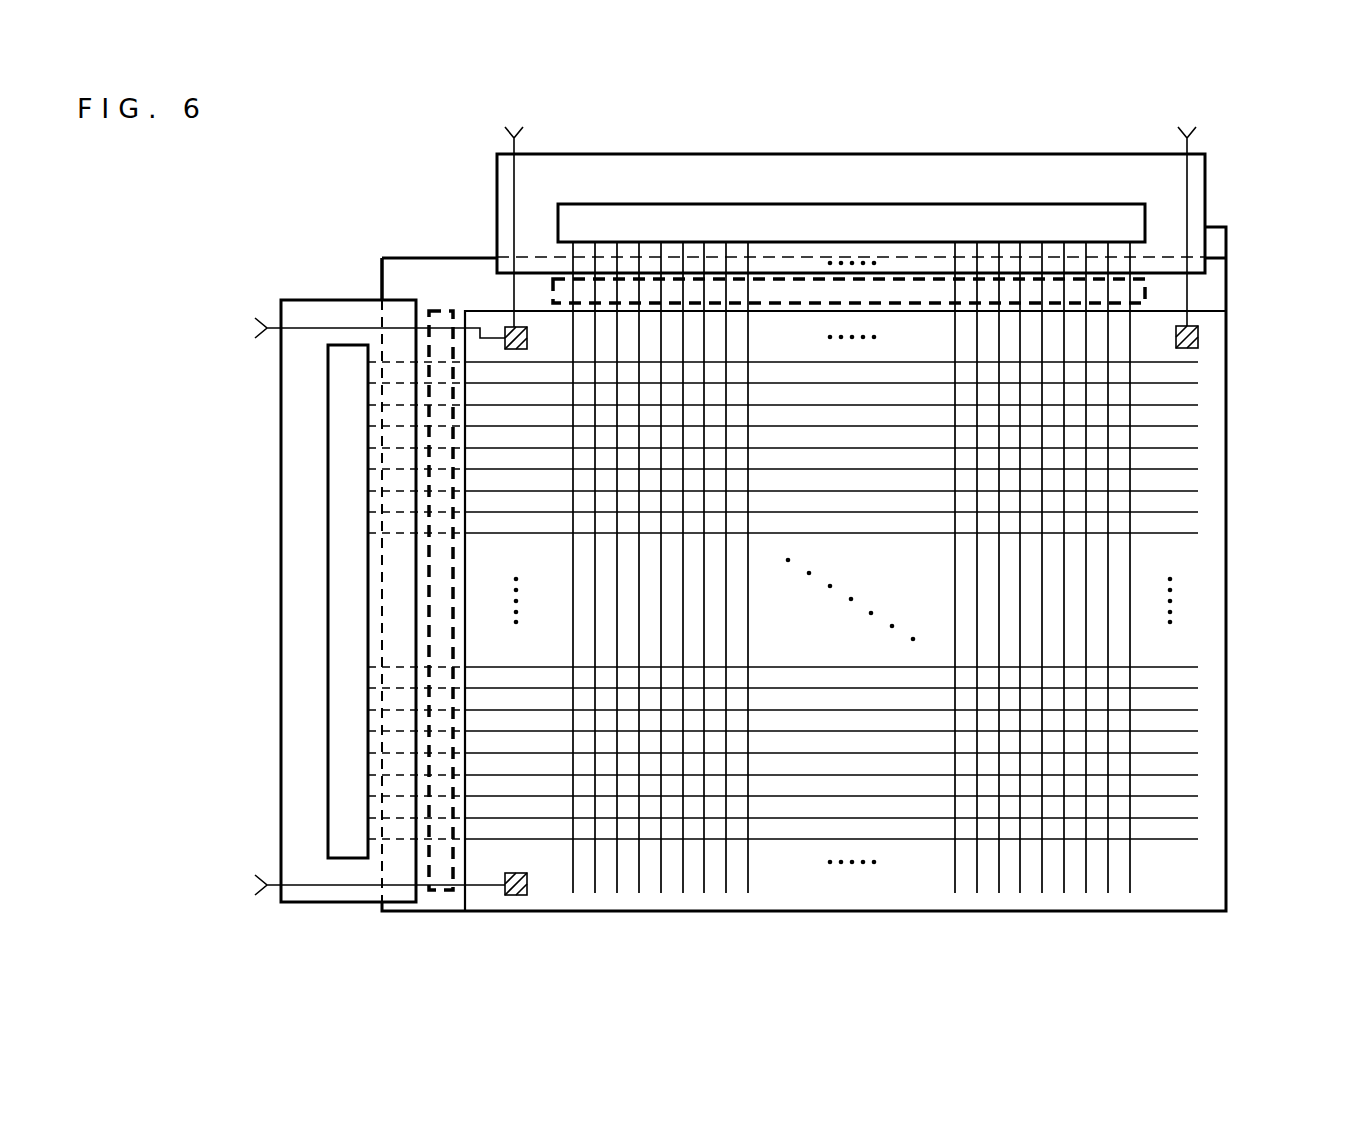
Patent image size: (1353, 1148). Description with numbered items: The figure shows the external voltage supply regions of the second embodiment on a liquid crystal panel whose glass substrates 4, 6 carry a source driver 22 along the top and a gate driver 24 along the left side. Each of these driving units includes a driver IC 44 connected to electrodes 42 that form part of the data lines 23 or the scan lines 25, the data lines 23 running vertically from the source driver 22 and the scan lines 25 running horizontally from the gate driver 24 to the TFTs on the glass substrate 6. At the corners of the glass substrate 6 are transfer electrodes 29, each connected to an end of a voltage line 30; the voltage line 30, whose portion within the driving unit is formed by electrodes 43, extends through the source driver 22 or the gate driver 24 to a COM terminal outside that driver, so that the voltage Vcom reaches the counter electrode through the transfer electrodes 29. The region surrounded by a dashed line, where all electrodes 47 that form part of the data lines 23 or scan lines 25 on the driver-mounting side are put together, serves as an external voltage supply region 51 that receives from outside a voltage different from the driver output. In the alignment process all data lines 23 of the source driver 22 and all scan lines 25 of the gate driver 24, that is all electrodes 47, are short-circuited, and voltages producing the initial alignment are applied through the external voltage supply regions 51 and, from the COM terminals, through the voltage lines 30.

The glass substrate 4 is at (1226, 886).
The glass substrate 6 is at (392, 288).
The source driver 22 is at (868, 153).
The data lines 23 is at (1107, 396).
The gate driver 24 is at (278, 566).
The scan lines 25 is at (1157, 469).
The transfer electrodes 29 is at (505, 327).
The voltage line 30 is at (1190, 293).
The electrodes 42 is at (662, 243).
The electrodes 43 is at (513, 206).
The driver IC 44 is at (985, 202).
The electrodes 47 is at (596, 296).
The external voltage supply region 51 is at (545, 272).